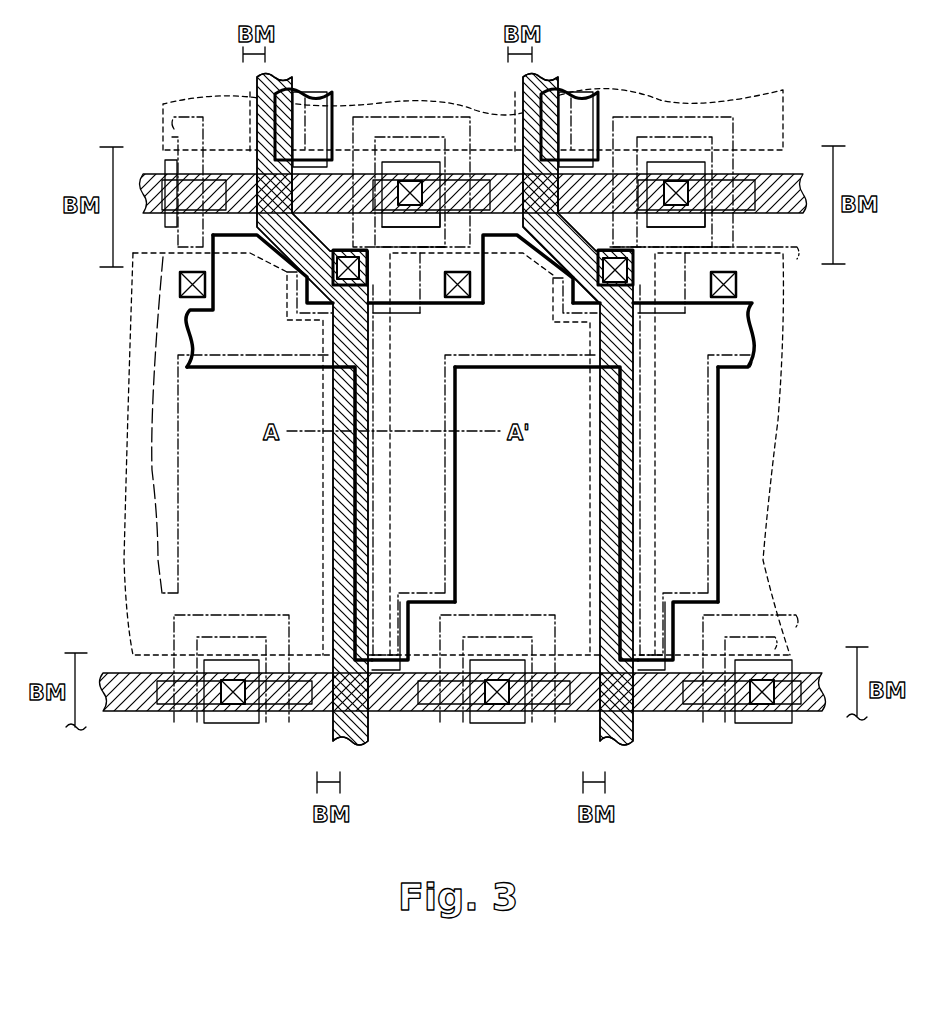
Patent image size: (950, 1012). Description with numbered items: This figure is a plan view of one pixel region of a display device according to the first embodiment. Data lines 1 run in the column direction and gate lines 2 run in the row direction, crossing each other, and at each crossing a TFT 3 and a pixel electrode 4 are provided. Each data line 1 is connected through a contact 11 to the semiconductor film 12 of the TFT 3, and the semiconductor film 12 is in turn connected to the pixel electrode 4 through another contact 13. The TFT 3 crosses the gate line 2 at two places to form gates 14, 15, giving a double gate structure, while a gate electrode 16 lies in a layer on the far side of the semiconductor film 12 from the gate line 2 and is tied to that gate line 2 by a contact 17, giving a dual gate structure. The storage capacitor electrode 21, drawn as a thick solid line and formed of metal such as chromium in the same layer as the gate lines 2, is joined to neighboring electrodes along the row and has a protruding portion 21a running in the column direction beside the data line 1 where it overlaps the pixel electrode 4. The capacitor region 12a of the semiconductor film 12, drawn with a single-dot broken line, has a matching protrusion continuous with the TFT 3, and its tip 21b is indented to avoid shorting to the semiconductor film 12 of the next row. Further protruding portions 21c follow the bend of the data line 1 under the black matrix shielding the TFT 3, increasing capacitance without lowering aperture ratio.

The data line 1 is at (280, 77).
The gate line 2 is at (797, 187).
The TFT 3 is at (462, 46).
The pixel electrode 4 is at (135, 522).
The contact 11 is at (378, 318).
The semiconductor film 12 is at (402, 132).
The capacitor region 12a is at (163, 450).
The contact 13 is at (193, 299).
The gate 14 is at (354, 173).
The gate 15 is at (453, 157).
The gate electrode 16 is at (447, 220).
The contact 17 is at (410, 206).
The storage capacitor electrode 21 is at (516, 447).
The protruding portion 21a is at (456, 494).
The tip 21b is at (413, 608).
The protruding portion 21c is at (282, 262).